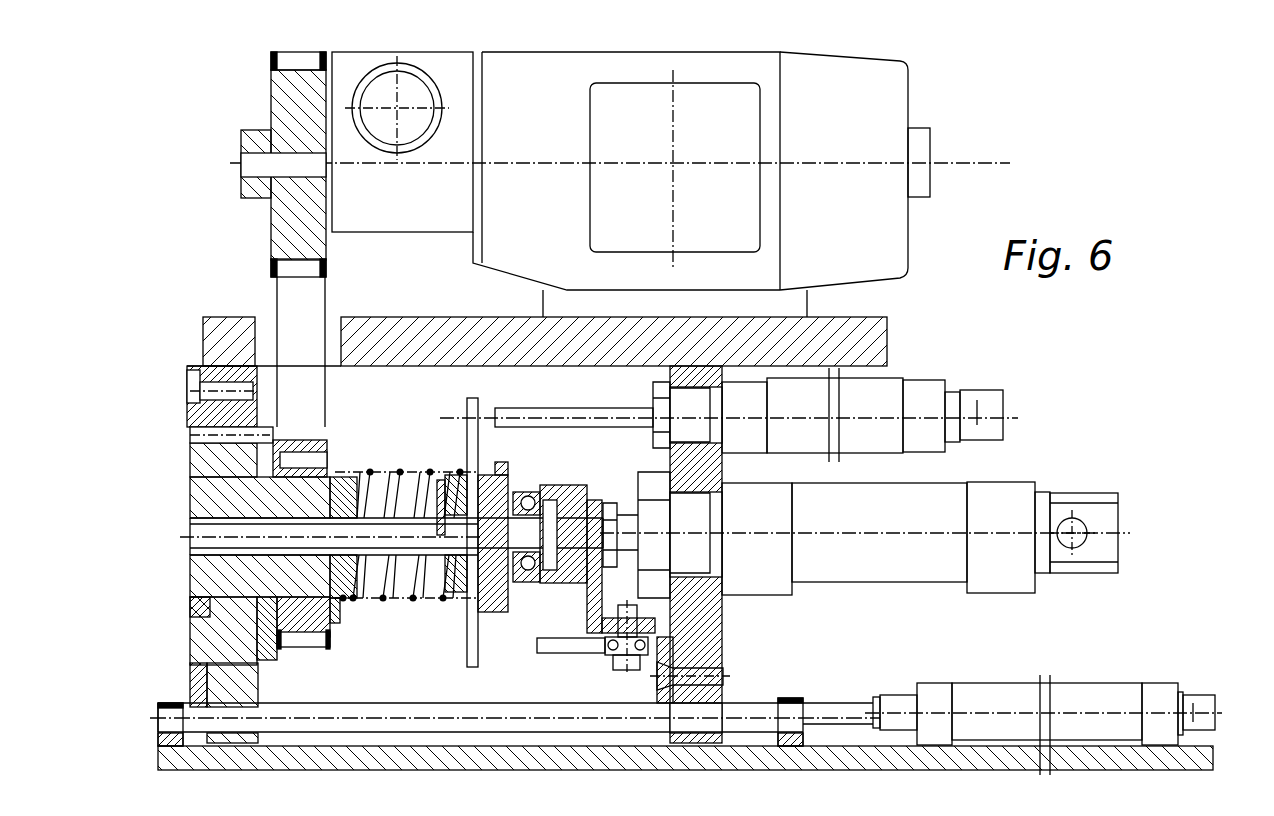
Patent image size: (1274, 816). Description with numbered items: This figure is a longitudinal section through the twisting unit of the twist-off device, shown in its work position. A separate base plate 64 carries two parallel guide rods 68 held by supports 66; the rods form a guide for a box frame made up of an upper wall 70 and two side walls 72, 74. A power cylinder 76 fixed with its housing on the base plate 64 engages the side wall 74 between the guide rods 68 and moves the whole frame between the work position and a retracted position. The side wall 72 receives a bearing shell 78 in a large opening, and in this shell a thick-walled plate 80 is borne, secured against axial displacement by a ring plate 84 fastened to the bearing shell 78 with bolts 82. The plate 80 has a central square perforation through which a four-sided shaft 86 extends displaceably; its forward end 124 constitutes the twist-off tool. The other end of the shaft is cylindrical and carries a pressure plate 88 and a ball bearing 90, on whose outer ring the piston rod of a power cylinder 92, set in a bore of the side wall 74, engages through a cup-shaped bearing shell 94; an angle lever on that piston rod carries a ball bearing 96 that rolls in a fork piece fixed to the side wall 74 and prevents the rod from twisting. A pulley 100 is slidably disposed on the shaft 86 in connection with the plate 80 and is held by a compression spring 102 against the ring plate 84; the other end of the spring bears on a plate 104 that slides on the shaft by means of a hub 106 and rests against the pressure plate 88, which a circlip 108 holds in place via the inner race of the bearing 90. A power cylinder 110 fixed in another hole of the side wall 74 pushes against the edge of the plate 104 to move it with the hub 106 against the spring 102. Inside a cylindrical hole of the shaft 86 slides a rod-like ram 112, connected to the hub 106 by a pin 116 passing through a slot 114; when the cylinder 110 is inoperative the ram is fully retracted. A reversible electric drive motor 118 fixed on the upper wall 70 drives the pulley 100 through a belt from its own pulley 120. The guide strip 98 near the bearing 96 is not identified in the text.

The base plate 64 is at (1198, 758).
The supports 66 is at (182, 703).
The guide rods 68 is at (343, 718).
The upper wall 70 is at (417, 338).
The side wall 72 is at (245, 697).
The side wall 74 is at (707, 662).
The power cylinder 76 is at (1093, 693).
The bearing shell 78 is at (197, 632).
The thick-walled plate 80 is at (207, 490).
The bolts 82 is at (188, 396).
The ring plate 84 is at (270, 413).
The four-sided shaft 86 is at (350, 608).
The pressure plate 88 is at (505, 475).
The ball bearing 90 is at (528, 583).
The power cylinder 92 is at (847, 575).
The cup-shaped bearing shell 94 is at (565, 485).
The ball bearing 96 is at (607, 655).
The guide strip 98 is at (562, 647).
The pulley 100 is at (297, 637).
The compression spring 102 is at (393, 470).
The plate 104 is at (466, 657).
The hub 106 is at (458, 595).
The circlip 108 is at (550, 570).
The power cylinder 110 is at (887, 382).
The ram 112 is at (207, 533).
The slot 114 is at (393, 480).
The pin 116 is at (441, 480).
The reversible electric drive motor 118 is at (893, 110).
The pulley 120 is at (293, 303).
The forward end 124 is at (193, 555).